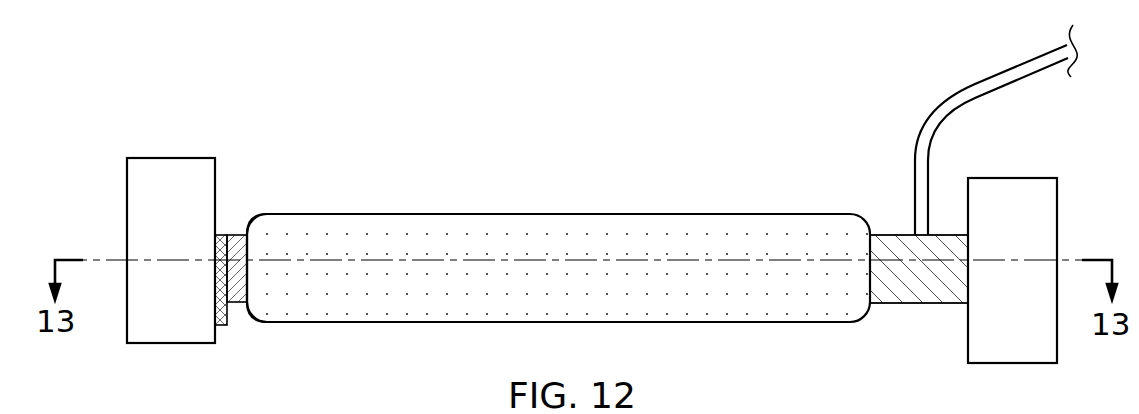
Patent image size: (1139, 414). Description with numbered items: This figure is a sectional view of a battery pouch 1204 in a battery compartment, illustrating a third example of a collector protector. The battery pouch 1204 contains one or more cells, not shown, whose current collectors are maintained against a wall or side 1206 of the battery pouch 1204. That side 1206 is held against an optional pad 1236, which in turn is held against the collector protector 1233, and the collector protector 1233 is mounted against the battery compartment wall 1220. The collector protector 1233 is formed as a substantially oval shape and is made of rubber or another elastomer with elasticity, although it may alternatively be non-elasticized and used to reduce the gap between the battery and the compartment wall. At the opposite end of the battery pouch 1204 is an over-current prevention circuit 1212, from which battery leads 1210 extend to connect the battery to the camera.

The battery compartment wall 1220 is at (173, 158).
The collector protector 1233 is at (222, 233).
The optional pad 1236 is at (235, 303).
The battery pouch 1204 is at (412, 223).
The side of the battery pouch 1206 is at (248, 227).
The over-current prevention circuit 1212 is at (917, 305).
The battery leads 1210 is at (992, 82).